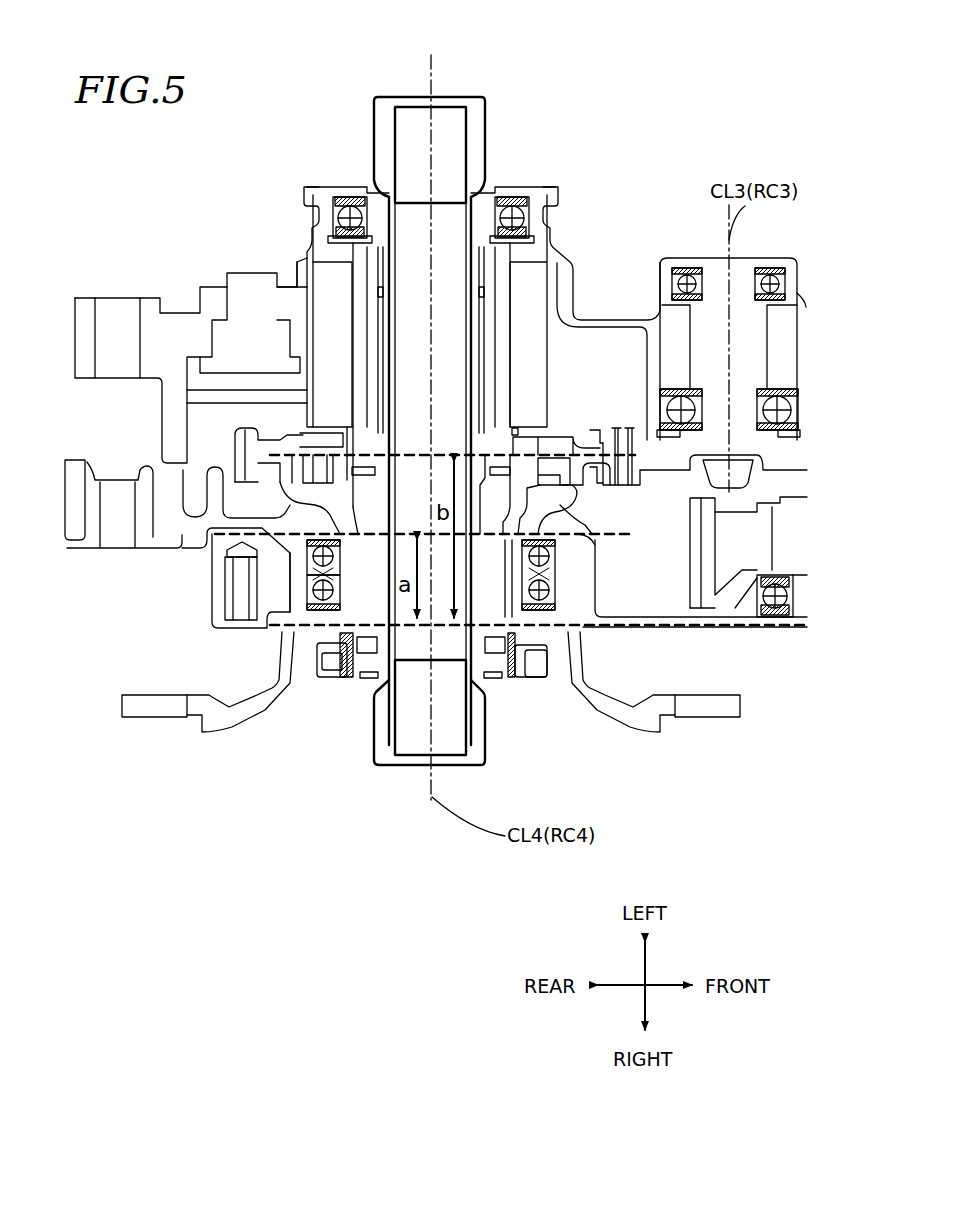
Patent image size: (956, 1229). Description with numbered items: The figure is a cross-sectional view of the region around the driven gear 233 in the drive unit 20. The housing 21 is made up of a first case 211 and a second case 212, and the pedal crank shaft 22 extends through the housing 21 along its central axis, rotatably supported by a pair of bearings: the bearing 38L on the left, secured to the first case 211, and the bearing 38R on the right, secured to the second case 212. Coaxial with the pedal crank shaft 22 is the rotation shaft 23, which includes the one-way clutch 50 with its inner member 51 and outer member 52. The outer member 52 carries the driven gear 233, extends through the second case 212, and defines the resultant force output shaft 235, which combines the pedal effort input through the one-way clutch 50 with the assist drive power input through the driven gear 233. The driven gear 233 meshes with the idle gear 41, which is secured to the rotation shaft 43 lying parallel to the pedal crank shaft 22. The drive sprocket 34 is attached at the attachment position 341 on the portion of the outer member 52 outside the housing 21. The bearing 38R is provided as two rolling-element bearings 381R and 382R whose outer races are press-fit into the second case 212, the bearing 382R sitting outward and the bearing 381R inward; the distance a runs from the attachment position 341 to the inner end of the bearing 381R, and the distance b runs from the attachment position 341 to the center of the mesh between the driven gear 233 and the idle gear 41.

The drive unit 20 is at (674, 144).
The housing 21 is at (303, 244).
The first case 211 is at (300, 275).
The second case 212 is at (750, 620).
The pedal crank shaft 22 is at (480, 742).
The rotation shaft 23 is at (510, 682).
The driven gear 233 is at (240, 478).
The resultant force output shaft 235 is at (335, 680).
The drive sprocket 34 is at (222, 734).
The attachment position 341 is at (332, 632).
The bearing 38L is at (344, 200).
The bearing 38R is at (136, 565).
The bearing 381R is at (312, 555).
The bearing 382R is at (312, 588).
The idle gear 41 is at (656, 468).
The rotation shaft 43 is at (737, 278).
The one-way clutch 50 is at (598, 416).
The inner member 51 is at (527, 440).
The outer member 52 is at (572, 440).